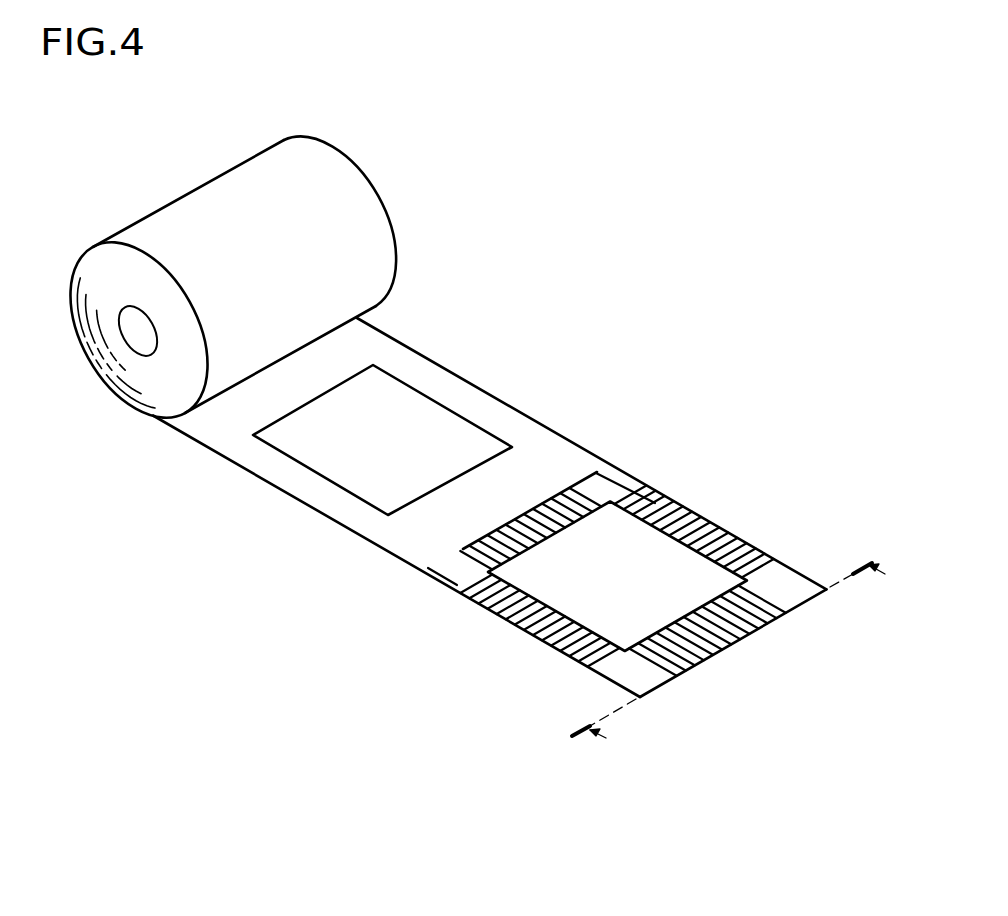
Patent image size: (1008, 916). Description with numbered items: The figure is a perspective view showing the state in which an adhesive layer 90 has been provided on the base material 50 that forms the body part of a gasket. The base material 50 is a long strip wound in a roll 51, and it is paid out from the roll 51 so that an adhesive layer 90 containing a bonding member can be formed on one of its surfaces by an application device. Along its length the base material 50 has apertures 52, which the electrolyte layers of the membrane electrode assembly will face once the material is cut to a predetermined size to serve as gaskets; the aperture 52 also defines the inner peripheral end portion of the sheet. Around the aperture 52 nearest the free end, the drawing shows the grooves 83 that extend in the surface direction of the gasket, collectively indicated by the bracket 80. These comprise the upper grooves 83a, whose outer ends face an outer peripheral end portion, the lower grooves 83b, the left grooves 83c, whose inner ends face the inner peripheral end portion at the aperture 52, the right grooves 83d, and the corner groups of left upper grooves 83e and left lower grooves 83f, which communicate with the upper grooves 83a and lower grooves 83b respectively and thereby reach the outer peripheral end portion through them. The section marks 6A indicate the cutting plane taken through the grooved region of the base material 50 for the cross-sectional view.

The base material 50 is at (548, 435).
The roll 51 is at (140, 398).
The aperture 52 is at (413, 412).
The pattern region 80 is at (647, 395).
The grooves 83 is at (315, 590).
The upper grooves 83a is at (657, 503).
The lower grooves 83b is at (525, 621).
The left grooves 83c is at (494, 547).
The right grooves 83d is at (634, 671).
The left upper grooves 83e is at (617, 468).
The left lower grooves 83f is at (449, 579).
The adhesive layer 90 is at (782, 567).
The section line 6A- 6A is at (714, 644).